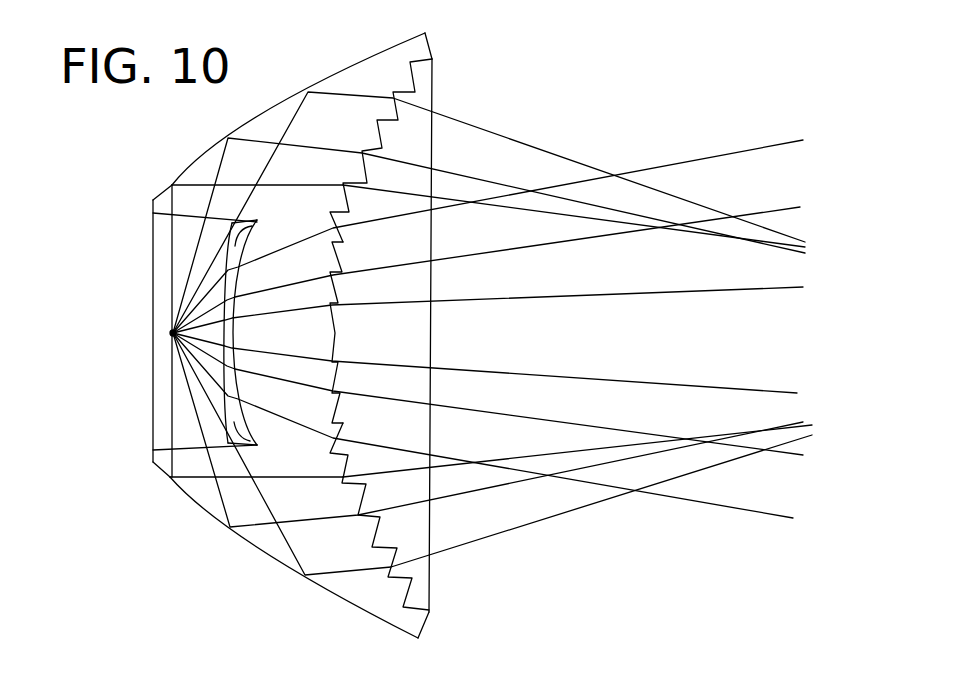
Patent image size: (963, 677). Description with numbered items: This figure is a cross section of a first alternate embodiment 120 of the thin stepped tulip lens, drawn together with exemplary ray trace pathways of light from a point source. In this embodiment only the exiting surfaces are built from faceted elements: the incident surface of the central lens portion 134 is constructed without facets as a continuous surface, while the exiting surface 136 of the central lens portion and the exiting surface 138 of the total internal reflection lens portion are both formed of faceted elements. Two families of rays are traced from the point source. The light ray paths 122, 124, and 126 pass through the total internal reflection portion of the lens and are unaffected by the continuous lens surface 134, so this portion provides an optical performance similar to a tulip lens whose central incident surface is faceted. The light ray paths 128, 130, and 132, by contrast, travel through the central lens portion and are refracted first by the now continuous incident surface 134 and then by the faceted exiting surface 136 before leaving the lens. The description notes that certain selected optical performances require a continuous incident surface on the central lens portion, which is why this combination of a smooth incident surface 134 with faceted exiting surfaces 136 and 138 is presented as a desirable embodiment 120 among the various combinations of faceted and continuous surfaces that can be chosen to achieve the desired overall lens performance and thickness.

The first alternate embodiment 120 is at (463, 71).
The light ray path 122 is at (186, 184).
The light ray path 124 is at (251, 140).
The light ray path 126 is at (350, 92).
The light ray path 128 is at (493, 367).
The light ray path 130 is at (511, 412).
The light ray path 132 is at (470, 448).
The incident surface of the central lens portion 134 is at (226, 367).
The exiting surface of the central lens portion 136 is at (370, 203).
The exiting surface of the total internal reflection lens portion 138 is at (433, 60).